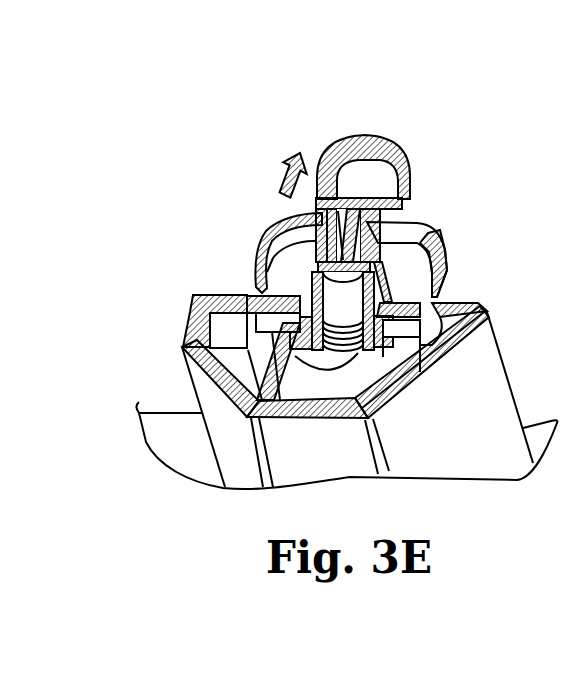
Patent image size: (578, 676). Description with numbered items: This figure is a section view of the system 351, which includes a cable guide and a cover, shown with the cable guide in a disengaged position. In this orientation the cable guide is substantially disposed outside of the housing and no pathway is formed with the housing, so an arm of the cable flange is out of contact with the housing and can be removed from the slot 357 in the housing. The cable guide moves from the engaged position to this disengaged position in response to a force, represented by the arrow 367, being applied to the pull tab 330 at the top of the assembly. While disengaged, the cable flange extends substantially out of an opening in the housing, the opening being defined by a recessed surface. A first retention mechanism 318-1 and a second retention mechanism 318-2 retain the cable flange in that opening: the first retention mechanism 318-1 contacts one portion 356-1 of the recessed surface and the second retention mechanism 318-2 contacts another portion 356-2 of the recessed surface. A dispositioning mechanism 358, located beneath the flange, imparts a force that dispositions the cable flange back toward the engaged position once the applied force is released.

The system 351 is at (216, 95).
The pull tab 330 is at (378, 122).
The arrow 367 is at (291, 152).
The slot 357 is at (253, 300).
The portion of recessed surface 356-2 is at (223, 297).
The portion of recessed surface 356-1 is at (480, 307).
The second retention mechanism 318-2 is at (184, 347).
The first retention mechanism 318-1 is at (405, 375).
The dispositioning mechanism 358 is at (317, 413).